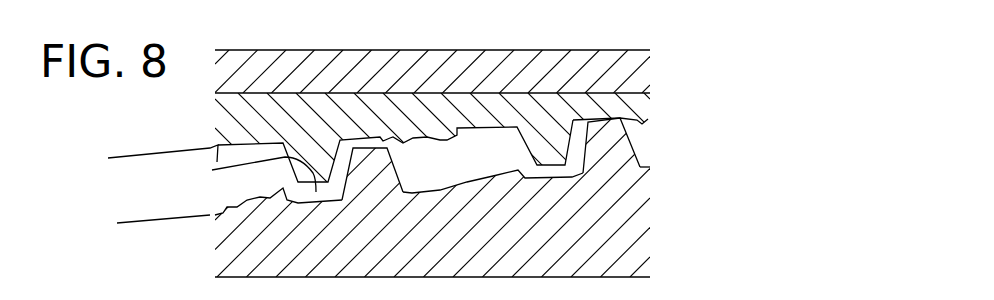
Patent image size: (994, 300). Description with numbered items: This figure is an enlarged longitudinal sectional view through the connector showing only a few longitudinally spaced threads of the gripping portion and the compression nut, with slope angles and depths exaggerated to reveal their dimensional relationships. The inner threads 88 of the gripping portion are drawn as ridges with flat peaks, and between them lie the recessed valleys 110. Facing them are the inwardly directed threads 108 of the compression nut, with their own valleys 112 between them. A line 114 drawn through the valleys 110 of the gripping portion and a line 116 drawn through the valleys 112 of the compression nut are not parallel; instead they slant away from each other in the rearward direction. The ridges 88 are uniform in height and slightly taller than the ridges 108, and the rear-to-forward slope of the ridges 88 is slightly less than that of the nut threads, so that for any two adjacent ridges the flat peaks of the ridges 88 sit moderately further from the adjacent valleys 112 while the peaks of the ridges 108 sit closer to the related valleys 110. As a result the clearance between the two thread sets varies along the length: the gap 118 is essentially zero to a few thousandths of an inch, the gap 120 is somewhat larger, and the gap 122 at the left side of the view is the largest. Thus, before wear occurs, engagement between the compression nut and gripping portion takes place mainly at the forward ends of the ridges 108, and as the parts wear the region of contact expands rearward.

The threads of the gripping portion 88 is at (310, 155).
The valleys of the gripping portion 110 is at (385, 143).
The line through the valleys of the gripping portion 114 is at (150, 157).
The gap at the left side 122 is at (244, 174).
The valleys of the compression nut 112 is at (280, 183).
The line through the valleys of the compression nut 116 is at (140, 223).
The threads of the compression nut 108 is at (387, 177).
The gap 118 is at (607, 123).
The gap 120 is at (552, 172).